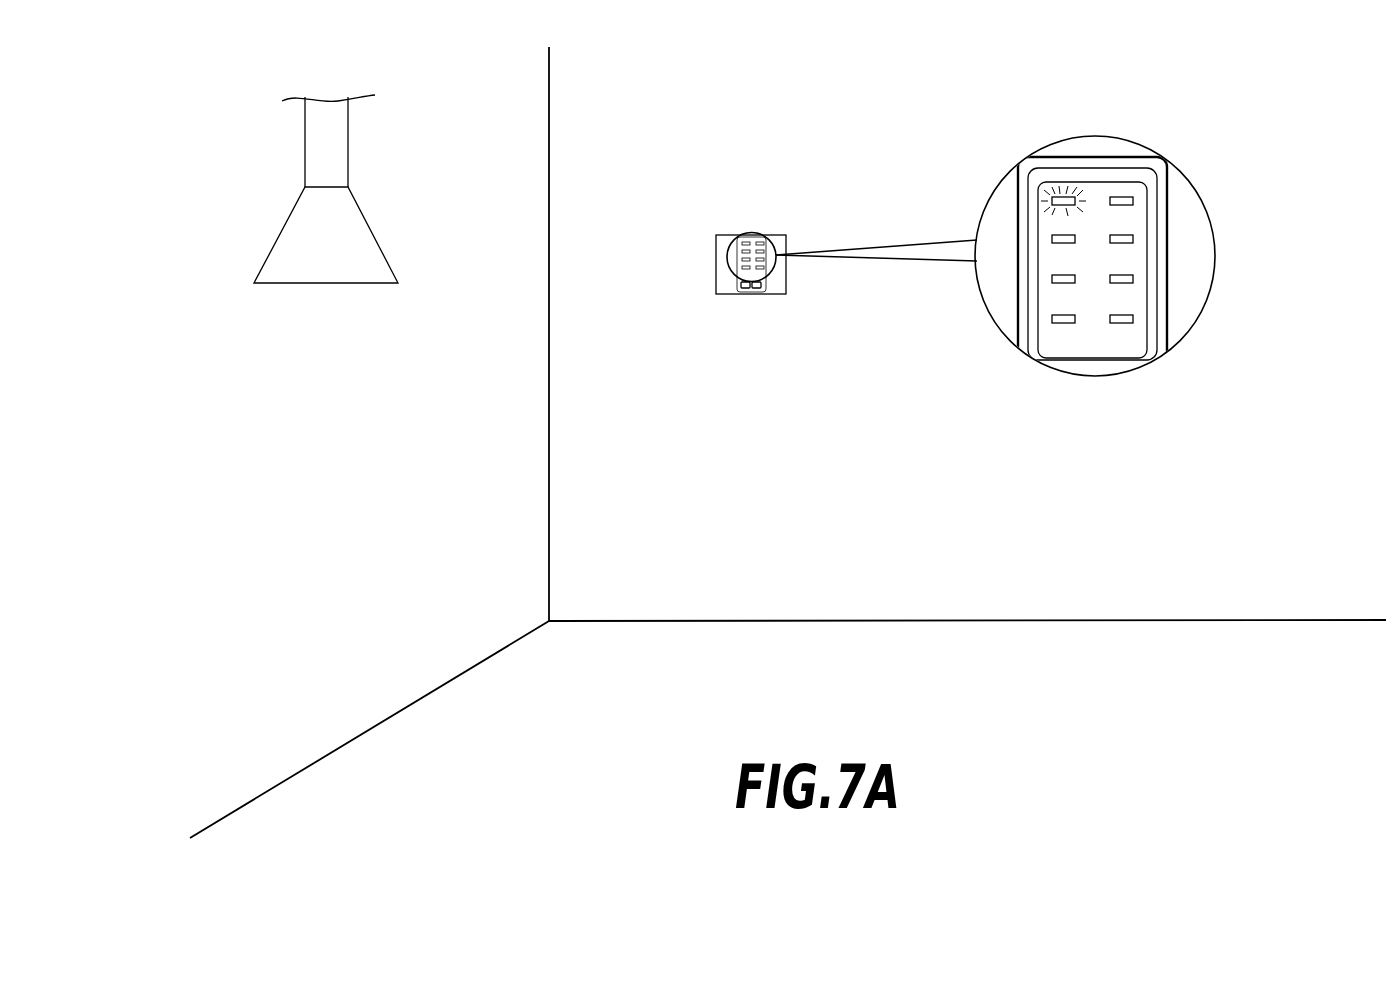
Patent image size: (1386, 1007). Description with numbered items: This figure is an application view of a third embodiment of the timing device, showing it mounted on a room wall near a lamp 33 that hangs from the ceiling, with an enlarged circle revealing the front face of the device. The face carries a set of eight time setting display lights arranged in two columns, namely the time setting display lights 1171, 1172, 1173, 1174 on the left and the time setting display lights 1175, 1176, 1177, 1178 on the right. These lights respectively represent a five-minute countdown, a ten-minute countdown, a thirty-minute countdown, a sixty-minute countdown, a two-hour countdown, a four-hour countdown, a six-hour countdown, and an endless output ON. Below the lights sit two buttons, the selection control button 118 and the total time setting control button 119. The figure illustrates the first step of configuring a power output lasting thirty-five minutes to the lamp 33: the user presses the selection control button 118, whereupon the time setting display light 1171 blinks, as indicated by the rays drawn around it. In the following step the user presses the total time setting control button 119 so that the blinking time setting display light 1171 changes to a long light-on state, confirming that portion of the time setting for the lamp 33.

The lamp 33 is at (357, 216).
The selection control button 118 is at (745, 289).
The total time setting control button 119 is at (758, 289).
The time setting display light 1171 is at (1052, 201).
The time setting display light 1172 is at (1052, 239).
The time setting display light 1173 is at (1052, 279).
The time setting display light 1174 is at (1052, 319).
The time setting display light 1175 is at (1133, 201).
The time setting display light 1176 is at (1133, 239).
The time setting display light 1177 is at (1133, 279).
The time setting display light 1178 is at (1133, 319).